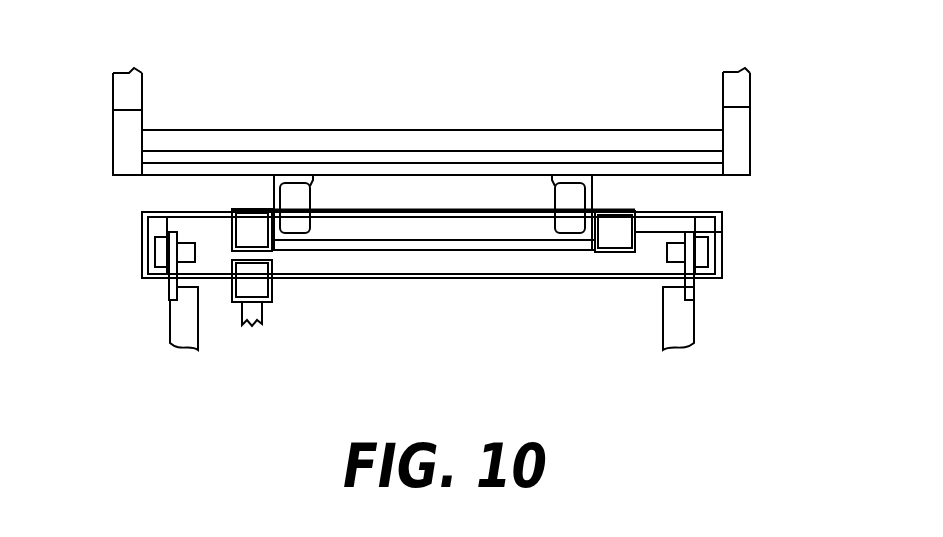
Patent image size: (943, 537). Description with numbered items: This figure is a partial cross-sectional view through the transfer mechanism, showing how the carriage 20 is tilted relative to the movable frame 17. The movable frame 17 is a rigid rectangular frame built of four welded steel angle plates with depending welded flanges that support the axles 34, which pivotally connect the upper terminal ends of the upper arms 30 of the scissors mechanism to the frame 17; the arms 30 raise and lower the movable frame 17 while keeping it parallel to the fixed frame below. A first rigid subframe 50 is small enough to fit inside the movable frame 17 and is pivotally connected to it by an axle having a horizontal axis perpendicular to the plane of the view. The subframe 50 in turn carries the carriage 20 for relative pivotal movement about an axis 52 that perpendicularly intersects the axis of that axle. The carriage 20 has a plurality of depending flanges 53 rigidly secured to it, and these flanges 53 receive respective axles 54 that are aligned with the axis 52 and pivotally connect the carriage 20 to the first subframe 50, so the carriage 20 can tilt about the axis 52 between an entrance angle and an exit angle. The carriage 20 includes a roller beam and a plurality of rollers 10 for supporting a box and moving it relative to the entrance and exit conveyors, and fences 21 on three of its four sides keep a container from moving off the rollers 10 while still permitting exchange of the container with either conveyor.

The rollers 10 is at (235, 138).
The movable frame 17 is at (157, 230).
The carriage 20 is at (122, 152).
The fences 21 is at (134, 90).
The arms 30 is at (168, 328).
The axles 34 is at (195, 253).
The first rigid subframe 50 is at (425, 230).
The axis 52 is at (724, 232).
The depending flanges 53 is at (292, 197).
The axles 54 is at (270, 250).